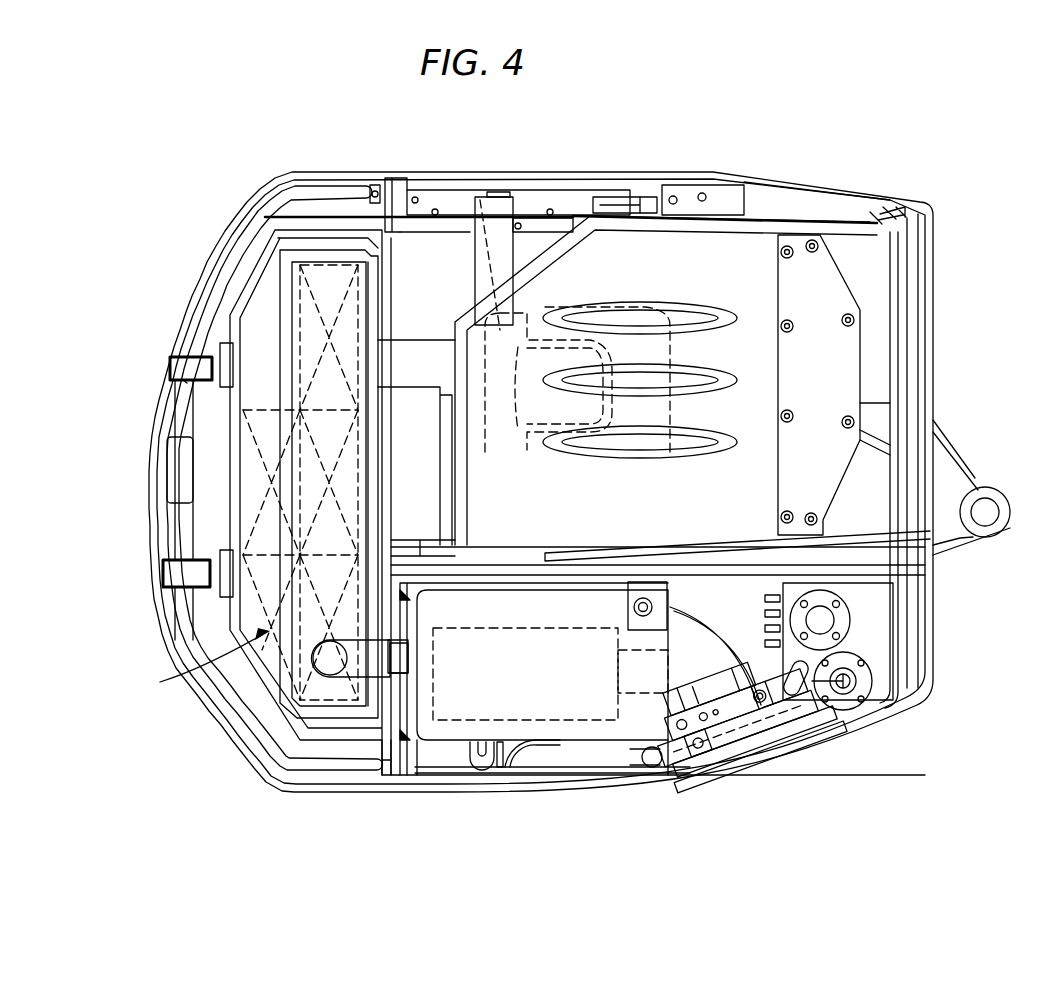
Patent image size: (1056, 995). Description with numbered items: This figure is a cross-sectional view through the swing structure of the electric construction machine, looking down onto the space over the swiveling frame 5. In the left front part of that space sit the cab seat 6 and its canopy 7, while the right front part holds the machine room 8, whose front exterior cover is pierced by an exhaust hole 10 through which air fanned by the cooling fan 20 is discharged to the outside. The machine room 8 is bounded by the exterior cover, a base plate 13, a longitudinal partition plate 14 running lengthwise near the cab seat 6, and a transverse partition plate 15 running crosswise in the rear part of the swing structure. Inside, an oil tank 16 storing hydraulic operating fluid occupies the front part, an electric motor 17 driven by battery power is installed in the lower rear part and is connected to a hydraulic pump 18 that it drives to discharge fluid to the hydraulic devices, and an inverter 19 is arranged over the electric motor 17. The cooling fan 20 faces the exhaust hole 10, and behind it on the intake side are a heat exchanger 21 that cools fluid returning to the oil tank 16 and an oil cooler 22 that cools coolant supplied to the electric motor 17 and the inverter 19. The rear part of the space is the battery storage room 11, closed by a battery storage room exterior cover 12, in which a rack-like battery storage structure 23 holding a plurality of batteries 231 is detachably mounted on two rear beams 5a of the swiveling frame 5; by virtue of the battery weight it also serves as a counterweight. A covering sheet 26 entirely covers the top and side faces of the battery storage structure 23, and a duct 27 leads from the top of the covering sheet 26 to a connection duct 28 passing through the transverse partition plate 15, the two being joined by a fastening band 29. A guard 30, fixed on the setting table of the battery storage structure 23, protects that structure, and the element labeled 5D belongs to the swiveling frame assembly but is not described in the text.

The swiveling frame 5 is at (473, 257).
The rear beams 5a is at (413, 338).
The pivot arm 5D is at (992, 532).
The cab seat 6 is at (500, 335).
The canopy 7 is at (593, 270).
The machine room 8 is at (722, 612).
The exhaust hole 10 is at (797, 758).
The battery storage room 11 is at (205, 420).
The battery storage room exterior cover 12 is at (148, 448).
The base plate 13 is at (748, 600).
The longitudinal partition plate 14 is at (649, 577).
The transverse partition plate 15 is at (387, 727).
The oil tank 16 is at (880, 660).
The electric motor 17 is at (522, 700).
The hydraulic pump 18 is at (639, 678).
The inverter 19 is at (575, 728).
The cooling fan 20 is at (777, 750).
The heat exchanger 21 is at (710, 773).
The oil cooler 22 is at (748, 768).
The battery storage structure 23 is at (290, 302).
The batteries 231 is at (328, 268).
The covering sheet 26 is at (195, 663).
The duct 27 is at (340, 706).
The connection duct 28 is at (410, 655).
The fastening band 29 is at (400, 694).
The guard 30 is at (220, 280).